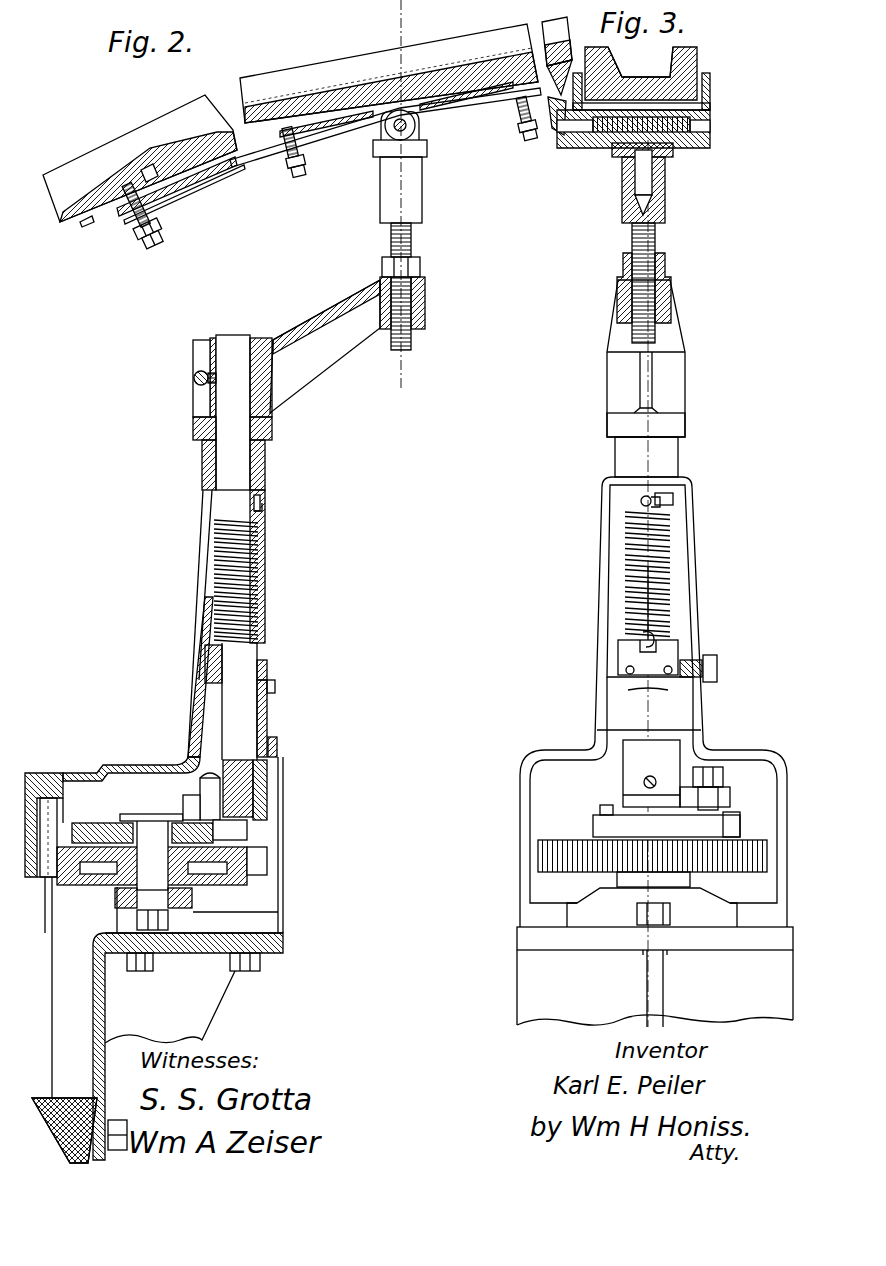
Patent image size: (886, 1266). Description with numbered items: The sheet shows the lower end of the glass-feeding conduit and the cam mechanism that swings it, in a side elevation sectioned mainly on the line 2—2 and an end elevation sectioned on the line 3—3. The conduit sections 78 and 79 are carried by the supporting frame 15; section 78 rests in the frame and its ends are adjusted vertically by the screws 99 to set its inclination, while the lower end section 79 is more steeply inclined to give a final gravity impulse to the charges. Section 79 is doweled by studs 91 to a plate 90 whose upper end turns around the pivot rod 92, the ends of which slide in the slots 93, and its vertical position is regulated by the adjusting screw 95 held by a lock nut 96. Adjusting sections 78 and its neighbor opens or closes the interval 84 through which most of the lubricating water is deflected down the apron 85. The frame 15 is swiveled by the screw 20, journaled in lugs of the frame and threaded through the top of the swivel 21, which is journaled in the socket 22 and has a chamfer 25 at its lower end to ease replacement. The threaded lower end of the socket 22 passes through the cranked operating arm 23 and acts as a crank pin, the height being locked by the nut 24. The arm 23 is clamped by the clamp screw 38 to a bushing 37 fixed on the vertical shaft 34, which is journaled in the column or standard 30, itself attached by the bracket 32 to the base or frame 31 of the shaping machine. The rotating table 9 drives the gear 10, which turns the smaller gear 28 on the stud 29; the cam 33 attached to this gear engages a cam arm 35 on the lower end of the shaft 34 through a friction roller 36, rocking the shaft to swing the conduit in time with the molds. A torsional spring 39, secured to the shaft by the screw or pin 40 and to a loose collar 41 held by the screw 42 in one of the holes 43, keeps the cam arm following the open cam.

In FIG. 3, the section line 2— 2 is at (643, 110).
In FIG. 2, the section line 3— 3 is at (403, 13).
In FIG. 2, the rotating table 9 is at (38, 775).
In FIG. 2, the gear 10 is at (58, 813).
In FIG. 2, the supporting frame 15 is at (495, 104).
In FIG. 3, the supporting frame 15 is at (711, 101).
In FIG. 2, the screw 20 is at (415, 128).
In FIG. 3, the screw 20 is at (607, 134).
In FIG. 2, the swivel 21 is at (376, 143).
In FIG. 3, the swivel 21 is at (650, 173).
In FIG. 2, the socket 22 is at (412, 200).
In FIG. 3, the socket 22 is at (662, 203).
In FIG. 2, the cranked operating arm 23 is at (343, 350).
In FIG. 3, the cranked operating arm 23 is at (675, 387).
In FIG. 2, the nut 24 is at (424, 270).
In FIG. 3, the nut 24 is at (665, 262).
In FIG. 3, the chamfer 25 is at (630, 200).
In FIG. 2, the gear 28 is at (268, 862).
In FIG. 3, the gear 28 is at (538, 862).
In FIG. 2, the stud 29 is at (145, 815).
In FIG. 3, the stud 29 is at (647, 928).
In FIG. 2, the column or standard 30 is at (272, 827).
In FIG. 3, the column or standard 30 is at (519, 818).
In FIG. 2, the base or frame 31 is at (75, 1095).
In FIG. 2, the bracket 32 is at (205, 1013).
In FIG. 3, the bracket 32 is at (523, 999).
In FIG. 2, the cam 33 is at (190, 820).
In FIG. 3, the cam 33 is at (593, 825).
In FIG. 2, the vertical shaft 34 is at (246, 723).
In FIG. 3, the vertical shaft 34 is at (673, 500).
In FIG. 2, the cam arm 35 is at (197, 795).
In FIG. 3, the cam arm 35 is at (720, 778).
In FIG. 2, the friction roller 36 is at (240, 831).
In FIG. 3, the friction roller 36 is at (723, 823).
In FIG. 2, the bushing 37 is at (273, 423).
In FIG. 3, the bushing 37 is at (678, 419).
In FIG. 2, the clamp screw 38 is at (193, 377).
In FIG. 2, the torsional spring 39 is at (259, 586).
In FIG. 3, the torsional spring 39 is at (670, 610).
In FIG. 2, the screw or pin 40 is at (263, 503).
In FIG. 3, the screw or pin 40 is at (641, 501).
In FIG. 2, the loose collar 41 is at (270, 676).
In FIG. 3, the loose collar 41 is at (618, 653).
In FIG. 3, the screw 42 is at (717, 663).
In FIG. 3, the holes 43 is at (665, 673).
In FIG. 2, the conduit section 78 is at (389, 73).
In FIG. 3, the conduit section 78 is at (690, 55).
In FIG. 2, the lower end section 79 is at (127, 134).
In FIG. 2, the interval 84 is at (537, 20).
In FIG. 2, the deflector or apron 85 is at (550, 112).
In FIG. 2, the plate 90 is at (93, 220).
In FIG. 2, the studs 91 is at (150, 166).
In FIG. 2, the pivot rod 92 is at (214, 170).
In FIG. 2, the slots 93 is at (237, 160).
In FIG. 2, the adjusting screw 95 is at (141, 246).
In FIG. 2, the lock nut 96 is at (153, 216).
In FIG. 2, the screws 99 is at (296, 178).